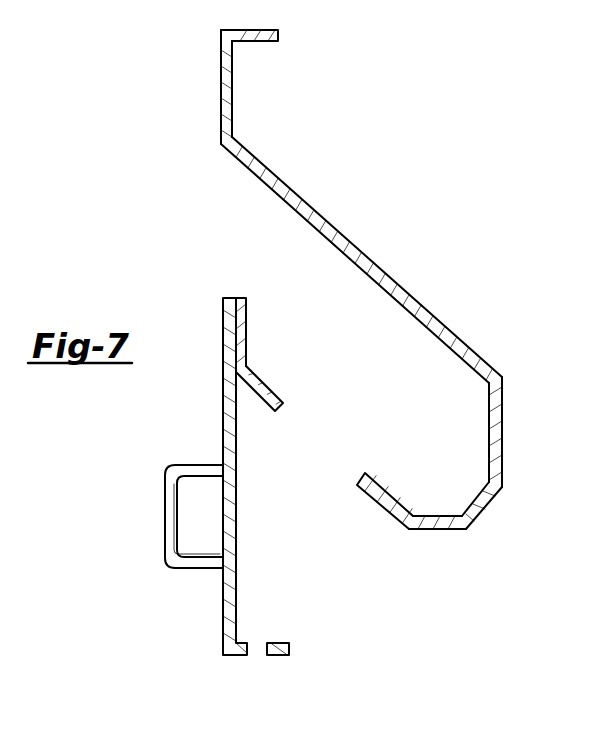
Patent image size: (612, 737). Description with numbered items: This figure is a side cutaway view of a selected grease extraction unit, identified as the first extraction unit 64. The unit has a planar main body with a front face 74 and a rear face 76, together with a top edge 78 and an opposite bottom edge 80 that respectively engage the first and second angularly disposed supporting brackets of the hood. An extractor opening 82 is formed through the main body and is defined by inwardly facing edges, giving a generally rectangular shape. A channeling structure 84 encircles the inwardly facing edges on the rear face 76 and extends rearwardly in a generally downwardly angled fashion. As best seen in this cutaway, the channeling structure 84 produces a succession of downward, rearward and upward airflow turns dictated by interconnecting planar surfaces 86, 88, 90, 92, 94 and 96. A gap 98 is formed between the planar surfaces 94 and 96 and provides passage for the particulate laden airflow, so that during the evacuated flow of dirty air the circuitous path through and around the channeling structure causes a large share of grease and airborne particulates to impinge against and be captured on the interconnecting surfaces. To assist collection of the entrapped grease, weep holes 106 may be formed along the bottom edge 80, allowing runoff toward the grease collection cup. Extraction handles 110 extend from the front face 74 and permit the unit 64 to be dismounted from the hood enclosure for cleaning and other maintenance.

The first extraction unit 64 is at (181, 47).
The front face 74 is at (221, 102).
The rear face 76 is at (233, 79).
The top edge 78 is at (265, 29).
The bottom edge 80 is at (283, 655).
The extractor opening 82 is at (245, 228).
The channeling structure 84 is at (401, 273).
The planar surface 86 is at (333, 228).
The planar surface 88 is at (503, 432).
The planar surface 90 is at (490, 500).
The planar surface 92 is at (430, 530).
The planar surface 94 is at (379, 508).
The planar surface 96 is at (258, 380).
The gap 98 is at (323, 449).
The weep holes 106 is at (255, 650).
The extraction handles 110 is at (165, 540).